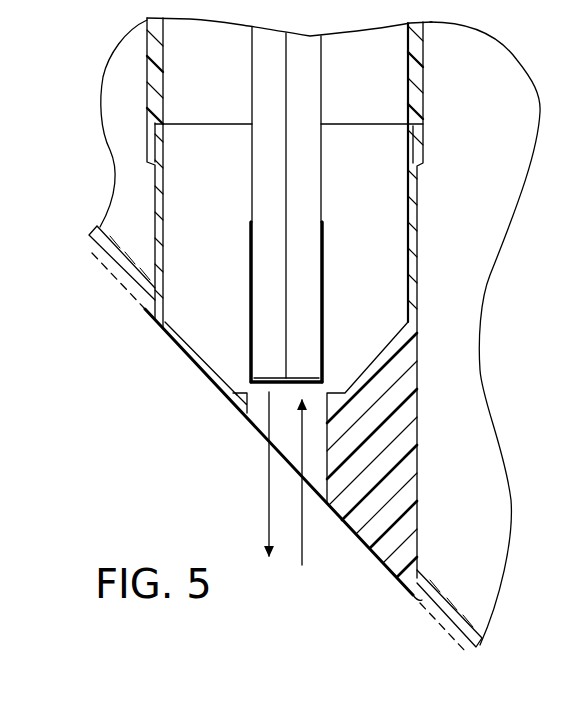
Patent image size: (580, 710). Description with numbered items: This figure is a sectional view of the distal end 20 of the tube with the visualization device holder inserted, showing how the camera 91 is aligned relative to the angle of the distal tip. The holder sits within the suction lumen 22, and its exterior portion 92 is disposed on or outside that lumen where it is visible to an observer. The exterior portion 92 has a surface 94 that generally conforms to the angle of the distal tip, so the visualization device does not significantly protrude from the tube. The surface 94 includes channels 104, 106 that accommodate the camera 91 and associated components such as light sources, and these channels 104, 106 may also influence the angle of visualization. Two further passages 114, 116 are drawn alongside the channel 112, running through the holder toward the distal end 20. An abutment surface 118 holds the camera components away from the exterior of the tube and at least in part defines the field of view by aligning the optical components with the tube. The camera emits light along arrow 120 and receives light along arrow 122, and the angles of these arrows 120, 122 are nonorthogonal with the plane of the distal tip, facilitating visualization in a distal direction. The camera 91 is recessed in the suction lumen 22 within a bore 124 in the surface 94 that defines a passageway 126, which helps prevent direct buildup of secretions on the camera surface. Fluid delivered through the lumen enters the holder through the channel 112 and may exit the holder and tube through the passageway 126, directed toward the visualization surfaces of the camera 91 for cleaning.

The distal end 20 is at (440, 93).
The suction lumen 22 is at (383, 73).
The camera 91 is at (322, 210).
The exterior portion 92 is at (150, 304).
The surface 94 is at (205, 378).
The channel 104 is at (250, 314).
The channel 106 is at (322, 311).
The channel 112 is at (207, 152).
The first passage 114 is at (268, 90).
The second passage 116 is at (313, 85).
The abutment surface 118 is at (324, 381).
The arrow 120 is at (268, 504).
The arrow 122 is at (322, 499).
The bore 124 is at (330, 457).
The passageway 126 is at (258, 426).